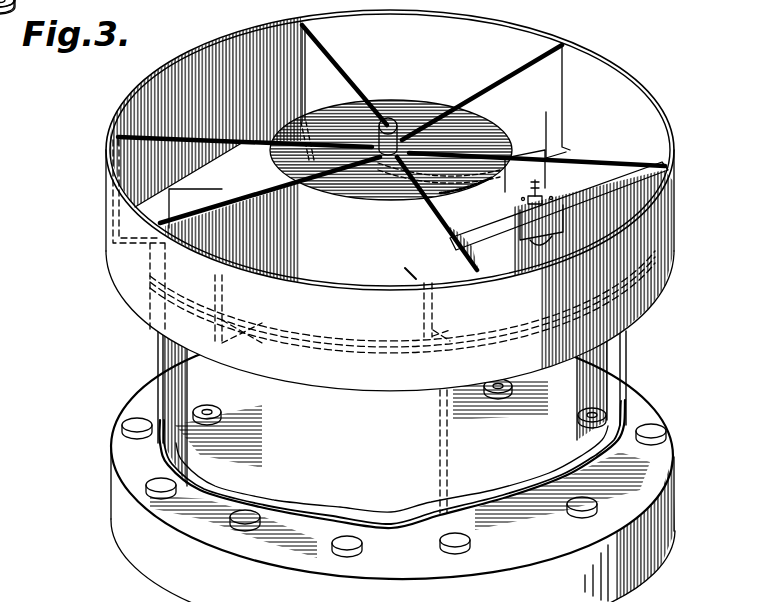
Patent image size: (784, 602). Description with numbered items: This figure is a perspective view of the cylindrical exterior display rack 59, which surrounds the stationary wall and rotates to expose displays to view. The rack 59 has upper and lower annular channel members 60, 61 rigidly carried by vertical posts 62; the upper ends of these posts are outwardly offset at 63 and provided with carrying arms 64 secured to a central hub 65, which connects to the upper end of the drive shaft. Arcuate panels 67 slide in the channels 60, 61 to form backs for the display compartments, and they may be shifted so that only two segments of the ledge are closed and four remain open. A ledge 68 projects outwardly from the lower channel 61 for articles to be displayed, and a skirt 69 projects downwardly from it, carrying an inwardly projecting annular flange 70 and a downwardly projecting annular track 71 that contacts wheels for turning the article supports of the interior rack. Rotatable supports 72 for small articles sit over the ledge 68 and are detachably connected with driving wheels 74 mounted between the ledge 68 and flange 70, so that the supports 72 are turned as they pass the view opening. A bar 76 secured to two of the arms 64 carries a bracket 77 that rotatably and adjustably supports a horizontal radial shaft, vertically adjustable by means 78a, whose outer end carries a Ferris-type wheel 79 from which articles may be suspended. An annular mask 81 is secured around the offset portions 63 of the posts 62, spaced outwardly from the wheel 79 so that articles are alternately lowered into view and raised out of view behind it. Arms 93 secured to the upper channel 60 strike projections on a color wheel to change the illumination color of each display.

The exterior display rack 59 is at (140, 343).
The upper annular channel member 60 is at (360, 332).
The lower annular channel member 61 is at (205, 500).
The vertical post 62 is at (160, 380).
The outwardly offset portion 63 is at (106, 222).
The carrying arm 64 is at (263, 142).
The hub 65 is at (391, 118).
The arcuate panel 67 is at (183, 352).
The ledge 68 is at (128, 458).
The skirt 69 is at (168, 570).
The annular flange 70 is at (612, 430).
The annular track 71 is at (531, 452).
The rotatable support 72 is at (122, 426).
The driving wheel 74 is at (573, 420).
The bar 76 is at (600, 174).
The bracket 77 is at (590, 218).
The vertical adjusting means 78a is at (522, 200).
The wheel 79 is at (530, 258).
The annular mask 81 is at (112, 255).
The arm 93 is at (222, 186).